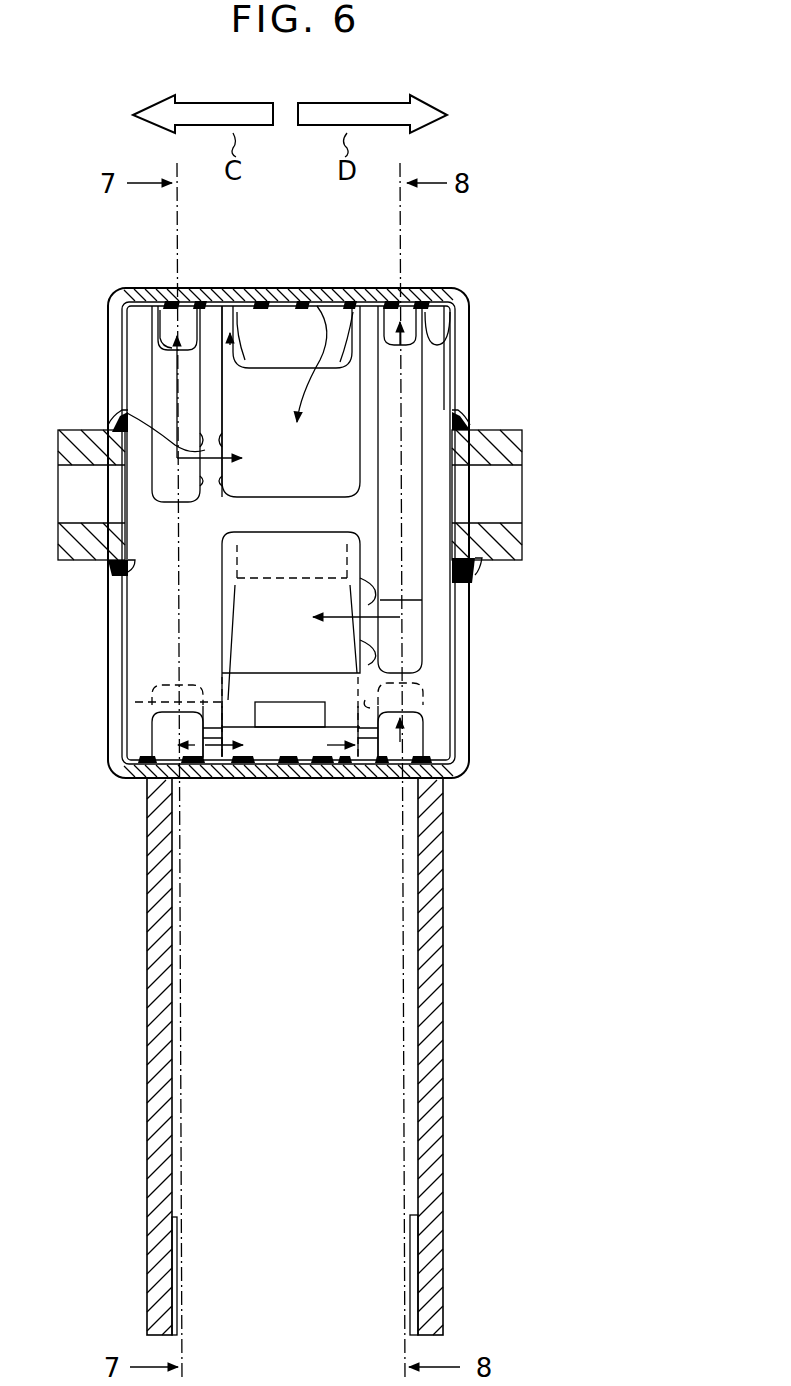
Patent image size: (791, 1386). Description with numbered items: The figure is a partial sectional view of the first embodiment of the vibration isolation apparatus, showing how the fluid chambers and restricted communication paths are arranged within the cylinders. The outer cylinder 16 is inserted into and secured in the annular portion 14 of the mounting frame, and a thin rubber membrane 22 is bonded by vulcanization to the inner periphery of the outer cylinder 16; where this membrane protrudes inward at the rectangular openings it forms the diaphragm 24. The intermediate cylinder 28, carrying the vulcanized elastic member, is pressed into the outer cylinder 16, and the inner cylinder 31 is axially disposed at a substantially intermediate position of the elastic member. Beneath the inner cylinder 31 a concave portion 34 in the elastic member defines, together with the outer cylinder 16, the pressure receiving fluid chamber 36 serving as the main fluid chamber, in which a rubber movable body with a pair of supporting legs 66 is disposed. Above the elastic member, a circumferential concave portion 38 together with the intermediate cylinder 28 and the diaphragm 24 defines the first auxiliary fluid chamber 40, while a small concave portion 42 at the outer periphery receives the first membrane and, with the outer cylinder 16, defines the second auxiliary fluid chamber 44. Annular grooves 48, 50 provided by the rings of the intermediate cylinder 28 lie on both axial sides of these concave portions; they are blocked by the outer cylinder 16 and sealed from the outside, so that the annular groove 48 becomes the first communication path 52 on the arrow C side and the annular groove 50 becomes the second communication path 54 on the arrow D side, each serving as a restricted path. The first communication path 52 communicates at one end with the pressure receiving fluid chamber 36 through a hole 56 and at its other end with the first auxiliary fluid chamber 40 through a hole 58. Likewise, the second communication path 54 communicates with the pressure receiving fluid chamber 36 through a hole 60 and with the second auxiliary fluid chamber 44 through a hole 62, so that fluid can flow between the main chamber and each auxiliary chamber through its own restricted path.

The annular portion 14 is at (452, 294).
The outer cylinder 16 is at (430, 300).
The thin rubber membrane 22 is at (447, 345).
The diaphragm 24 is at (273, 337).
The intermediate cylinder 28 is at (140, 355).
The inner cylinder 31 is at (522, 492).
The concave portion 34 is at (352, 747).
The pressure receiving fluid chamber 36 is at (308, 738).
The concave portion 38 is at (318, 304).
The first auxiliary fluid chamber 40 is at (225, 297).
The small concave portion 42 is at (245, 562).
The second auxiliary fluid chamber 44 is at (330, 637).
The annular groove 48 is at (185, 298).
The annular groove 50 is at (370, 290).
The first communication path 52 is at (150, 297).
The second communication path 54 is at (402, 290).
The hole 56 is at (135, 702).
The hole 58 is at (118, 410).
The hole 60 is at (423, 705).
The hole 62 is at (422, 600).
The supporting legs 66 is at (275, 717).